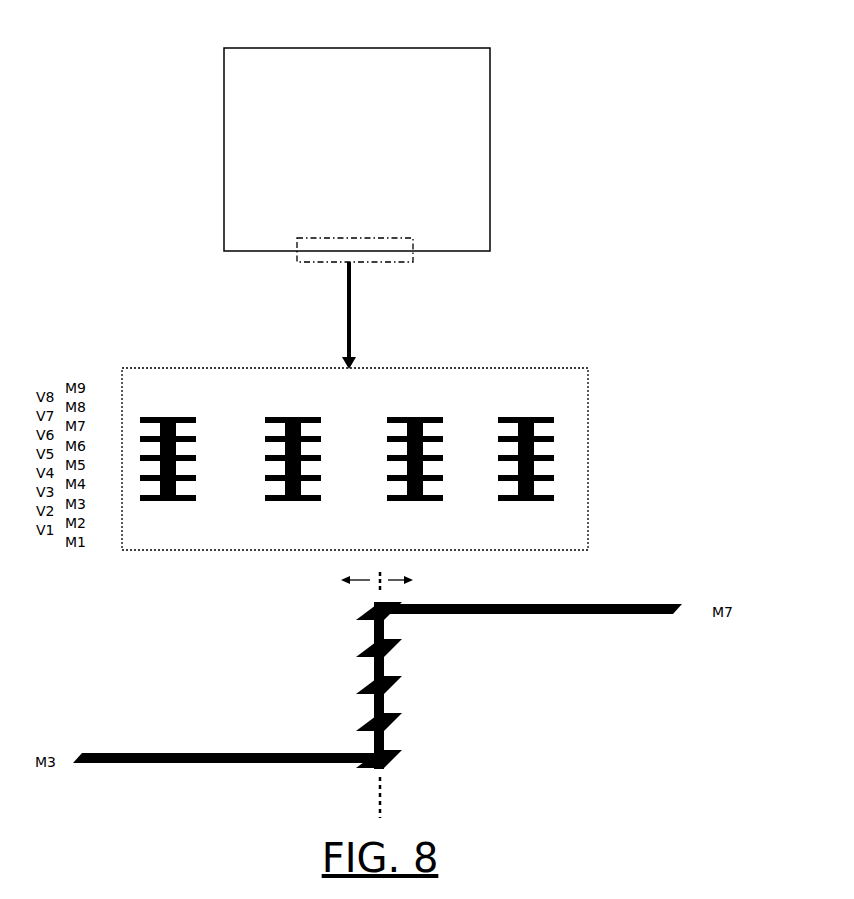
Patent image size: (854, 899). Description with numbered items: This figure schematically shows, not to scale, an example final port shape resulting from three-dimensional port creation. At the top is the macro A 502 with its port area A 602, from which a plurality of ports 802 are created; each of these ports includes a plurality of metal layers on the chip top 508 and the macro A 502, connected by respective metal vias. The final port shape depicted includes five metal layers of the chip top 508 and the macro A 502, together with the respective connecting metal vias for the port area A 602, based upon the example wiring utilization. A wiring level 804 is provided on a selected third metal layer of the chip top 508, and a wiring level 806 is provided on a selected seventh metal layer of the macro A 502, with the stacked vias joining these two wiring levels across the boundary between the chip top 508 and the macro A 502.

The macro A 502 is at (389, 320).
The port area A 602 is at (355, 227).
The ports 1-4 802 is at (344, 415).
The chip top 508 is at (313, 580).
The wiring level 804 is at (173, 753).
The wiring level 806 is at (585, 604).